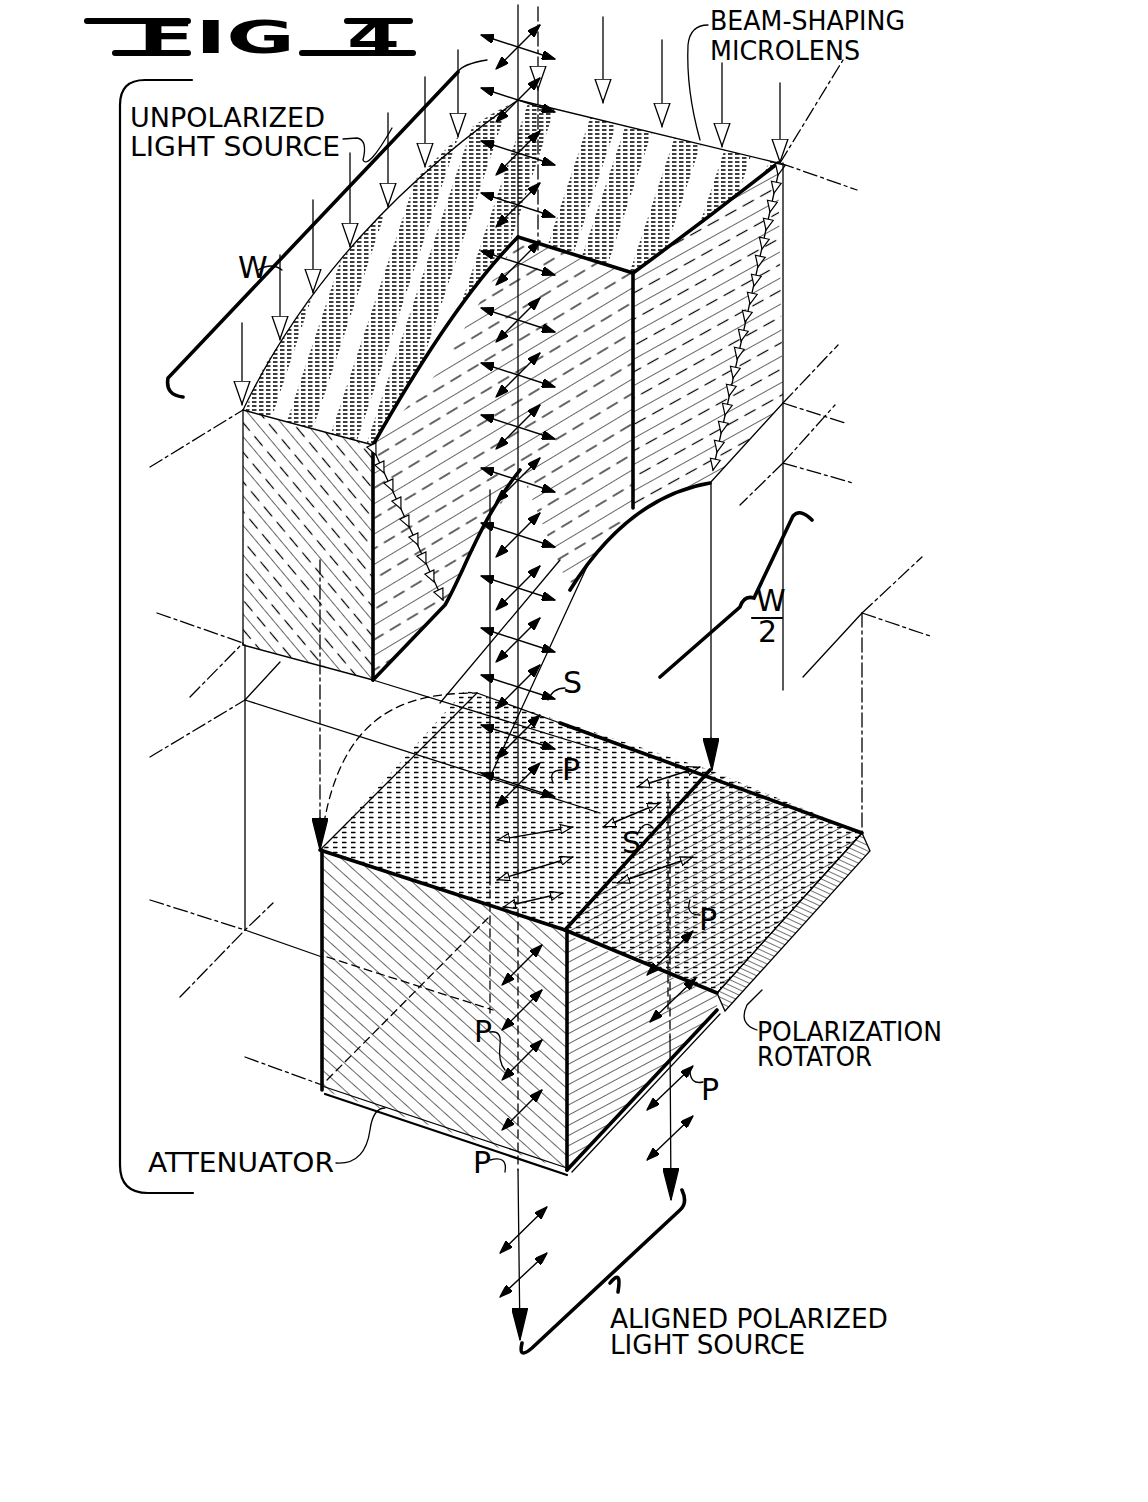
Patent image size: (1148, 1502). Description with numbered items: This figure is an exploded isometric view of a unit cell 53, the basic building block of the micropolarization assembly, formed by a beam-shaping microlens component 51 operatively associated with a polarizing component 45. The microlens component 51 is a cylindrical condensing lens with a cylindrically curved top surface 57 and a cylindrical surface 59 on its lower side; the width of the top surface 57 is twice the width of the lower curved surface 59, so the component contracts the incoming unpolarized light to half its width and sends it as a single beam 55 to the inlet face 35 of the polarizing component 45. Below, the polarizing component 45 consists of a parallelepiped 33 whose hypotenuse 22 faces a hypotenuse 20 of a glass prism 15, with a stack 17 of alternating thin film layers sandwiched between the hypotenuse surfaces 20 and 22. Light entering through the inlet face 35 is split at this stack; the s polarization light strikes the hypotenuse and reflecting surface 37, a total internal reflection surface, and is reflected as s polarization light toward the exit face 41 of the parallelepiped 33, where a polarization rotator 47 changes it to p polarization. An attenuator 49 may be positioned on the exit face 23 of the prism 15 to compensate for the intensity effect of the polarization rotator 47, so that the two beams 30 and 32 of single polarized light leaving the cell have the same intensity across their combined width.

The glass prism 15 is at (312, 1006).
The stack of alternating thin film layers 17 is at (318, 849).
The hypotenuse of the glass prism 20 is at (432, 895).
The hypotenuse of the parallelepiped 22 is at (612, 955).
The exit face of the prism 23 is at (604, 1140).
The beam of single polarized light 30 is at (505, 1268).
The beam of single polarized light 32 is at (690, 1165).
The parallelepiped 33 is at (825, 775).
The inlet face 35 is at (515, 930).
The hypotenuse and reflecting surface 37 is at (752, 792).
The exit face of the prism member 41 is at (848, 847).
The polarizing component 45 is at (290, 837).
The polarization rotator 47 is at (866, 870).
The attenuator 49 is at (323, 1092).
The beam-shaping microlens component 51 is at (368, 205).
The unit cell 53 is at (118, 620).
The single beam 55 is at (700, 604).
The cylindrically curved top surface 57 is at (463, 305).
The cylindrical surface 59 is at (462, 553).